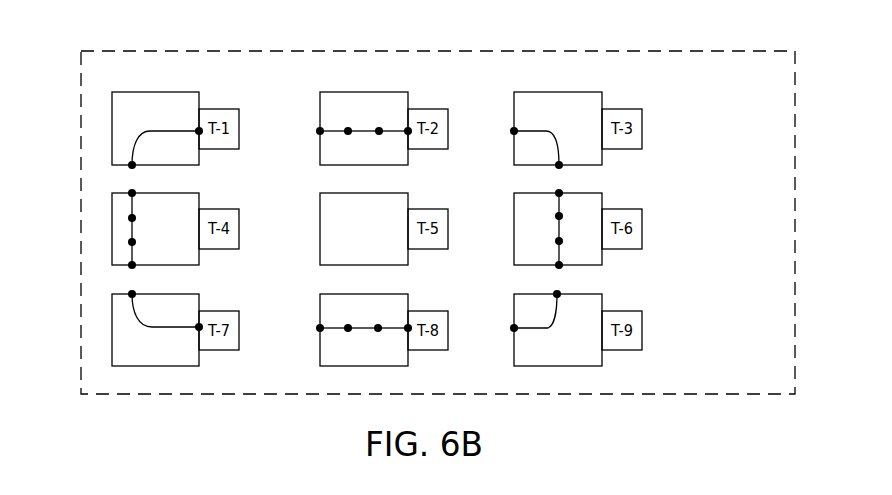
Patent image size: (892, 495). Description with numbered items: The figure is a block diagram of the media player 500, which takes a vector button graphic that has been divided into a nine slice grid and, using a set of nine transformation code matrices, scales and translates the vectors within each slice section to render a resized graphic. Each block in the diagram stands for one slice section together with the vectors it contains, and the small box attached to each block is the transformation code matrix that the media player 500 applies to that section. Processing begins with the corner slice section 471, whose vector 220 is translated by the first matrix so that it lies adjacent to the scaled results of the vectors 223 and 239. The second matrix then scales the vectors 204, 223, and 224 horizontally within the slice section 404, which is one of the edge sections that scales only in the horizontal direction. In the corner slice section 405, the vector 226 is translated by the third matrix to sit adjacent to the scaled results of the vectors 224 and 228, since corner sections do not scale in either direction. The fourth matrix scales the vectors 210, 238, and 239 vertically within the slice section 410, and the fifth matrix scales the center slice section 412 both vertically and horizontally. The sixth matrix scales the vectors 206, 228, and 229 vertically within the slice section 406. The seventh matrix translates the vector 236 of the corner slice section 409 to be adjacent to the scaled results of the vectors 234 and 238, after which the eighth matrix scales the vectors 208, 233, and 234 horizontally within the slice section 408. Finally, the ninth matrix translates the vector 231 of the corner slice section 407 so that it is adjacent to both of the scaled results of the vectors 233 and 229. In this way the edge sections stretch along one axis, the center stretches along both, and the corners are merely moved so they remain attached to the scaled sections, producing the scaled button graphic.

The media player 500 is at (778, 84).
The corner slice section 471 is at (192, 114).
The vector 220 is at (145, 133).
The slice section 404 is at (405, 114).
The vector 223 is at (333, 128).
The vector 204 is at (363, 134).
The vector 224 is at (393, 134).
The corner slice section 405 is at (598, 114).
The vector 226 is at (551, 134).
The slice section 410 is at (197, 212).
The vector 239 is at (133, 202).
The vector 210 is at (133, 232).
The vector 238 is at (137, 255).
The slice section 412 is at (377, 236).
The slice section 406 is at (545, 212).
The vector 228 is at (561, 200).
The vector 206 is at (561, 230).
The vector 229 is at (562, 255).
The corner slice section 409 is at (193, 360).
The vector 236 is at (137, 322).
The slice section 408 is at (405, 314).
The vector 234 is at (333, 325).
The vector 208 is at (363, 332).
The vector 233 is at (393, 332).
The corner slice section 407 is at (597, 314).
The vector 231 is at (552, 329).